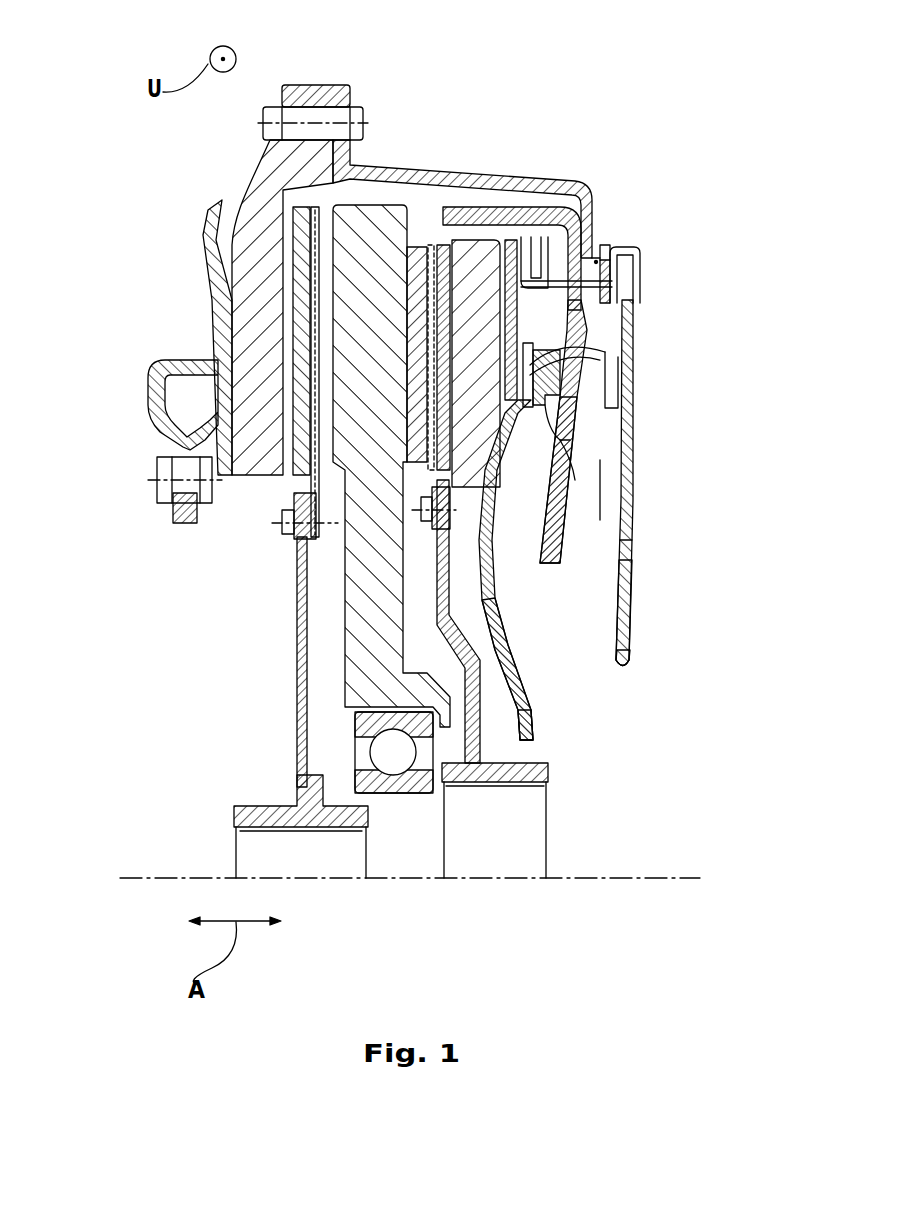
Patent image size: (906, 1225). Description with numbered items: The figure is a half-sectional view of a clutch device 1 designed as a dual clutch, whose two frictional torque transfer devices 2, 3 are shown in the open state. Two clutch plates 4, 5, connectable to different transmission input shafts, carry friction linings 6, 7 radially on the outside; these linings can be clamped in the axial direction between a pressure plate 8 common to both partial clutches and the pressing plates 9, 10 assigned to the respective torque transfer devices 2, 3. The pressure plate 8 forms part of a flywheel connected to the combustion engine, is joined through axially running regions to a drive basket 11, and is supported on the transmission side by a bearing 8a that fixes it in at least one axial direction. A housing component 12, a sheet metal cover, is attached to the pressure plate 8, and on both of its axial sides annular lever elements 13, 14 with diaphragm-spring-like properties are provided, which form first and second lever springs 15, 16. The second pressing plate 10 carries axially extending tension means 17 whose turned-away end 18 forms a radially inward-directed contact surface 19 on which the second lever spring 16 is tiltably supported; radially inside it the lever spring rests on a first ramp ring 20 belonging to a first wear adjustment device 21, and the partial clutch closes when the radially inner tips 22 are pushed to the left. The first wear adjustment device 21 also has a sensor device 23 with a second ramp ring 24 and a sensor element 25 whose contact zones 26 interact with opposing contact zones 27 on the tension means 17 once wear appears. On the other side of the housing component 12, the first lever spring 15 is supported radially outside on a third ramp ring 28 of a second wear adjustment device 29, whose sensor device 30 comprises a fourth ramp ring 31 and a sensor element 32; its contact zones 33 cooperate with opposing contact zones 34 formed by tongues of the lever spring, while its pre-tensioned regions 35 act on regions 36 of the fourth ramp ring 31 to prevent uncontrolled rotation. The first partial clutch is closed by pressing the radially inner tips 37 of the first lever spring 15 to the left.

The clutch device 1 is at (499, 82).
The torque transfer device 2 is at (484, 196).
The torque transfer device 3 is at (303, 200).
The clutch plate 4 is at (545, 785).
The clutch plate 5 is at (298, 788).
The friction lining 6 is at (305, 540).
The friction lining 7 is at (302, 288).
The pressure plate 8 is at (352, 686).
The bearing 8a is at (393, 758).
The pressing plate 9 is at (466, 492).
The pressing plate 10 is at (188, 440).
The drive basket 11 is at (218, 310).
The housing component 12 is at (622, 515).
The lever element 13 is at (493, 588).
The lever element 14 is at (622, 500).
The lever spring 15 is at (522, 672).
The lever spring 16 is at (627, 572).
The tension means 17 is at (388, 166).
The turned-away end 18 is at (640, 250).
The contact surface 19 is at (645, 272).
The ramp ring 20 is at (560, 352).
The wear adjustment device 21 is at (668, 284).
The radially inner tips 22 is at (628, 647).
The sensor device 23 is at (598, 260).
The ramp ring 24 is at (633, 300).
The sensor element 25 is at (618, 247).
The contact zone 26 is at (612, 242).
The opposing contact zone 27 is at (580, 218).
The ramp ring 28 is at (530, 237).
The wear adjustment device 29 is at (524, 305).
The sensor device 30 is at (290, 518).
The ramp ring 31 is at (560, 410).
The sensor element 32 is at (600, 355).
The contact zone 33 is at (560, 423).
The opposing contact zone 34 is at (560, 447).
The region 35 is at (560, 343).
The region 36 is at (560, 408).
The radially inner tips 37 is at (532, 742).